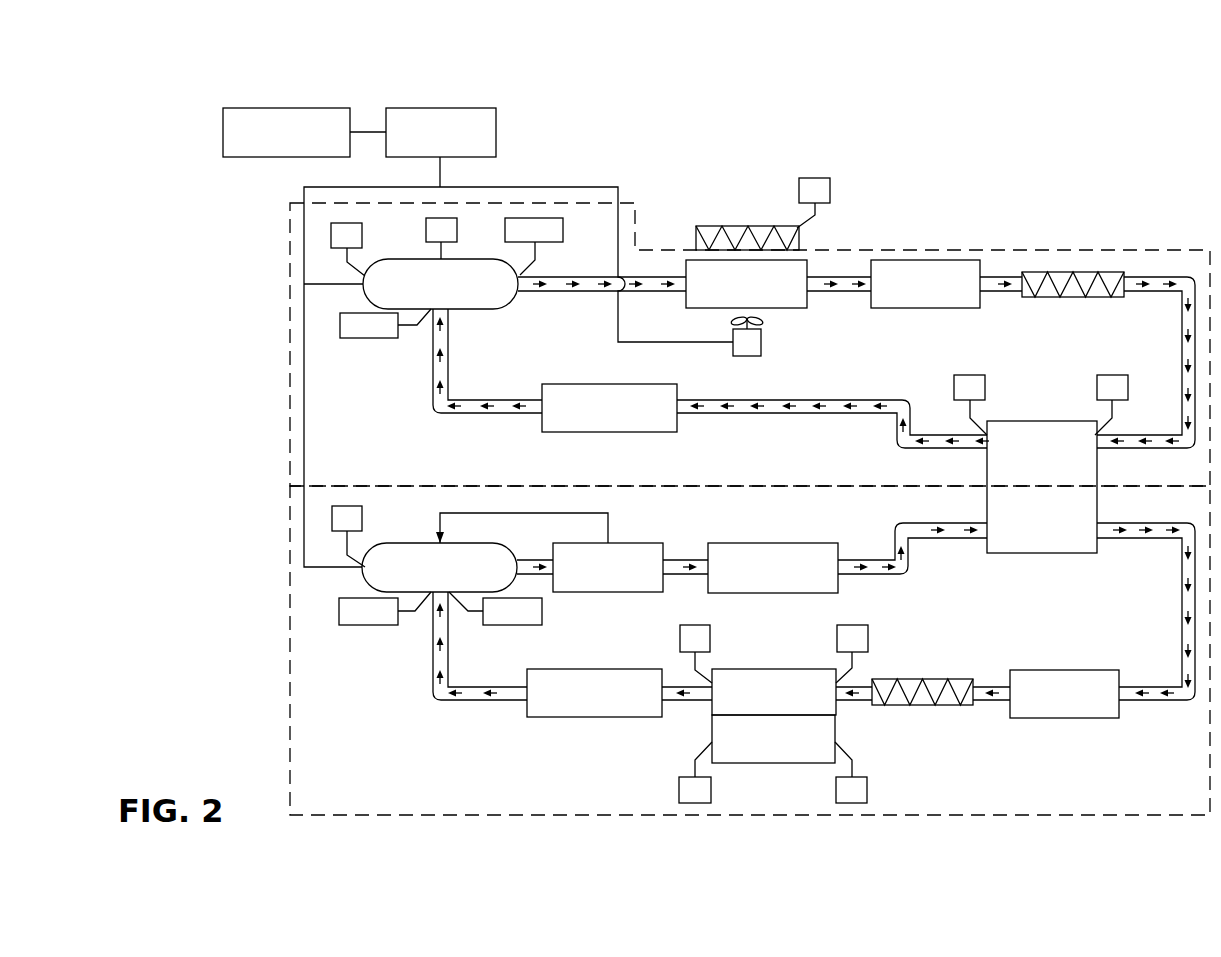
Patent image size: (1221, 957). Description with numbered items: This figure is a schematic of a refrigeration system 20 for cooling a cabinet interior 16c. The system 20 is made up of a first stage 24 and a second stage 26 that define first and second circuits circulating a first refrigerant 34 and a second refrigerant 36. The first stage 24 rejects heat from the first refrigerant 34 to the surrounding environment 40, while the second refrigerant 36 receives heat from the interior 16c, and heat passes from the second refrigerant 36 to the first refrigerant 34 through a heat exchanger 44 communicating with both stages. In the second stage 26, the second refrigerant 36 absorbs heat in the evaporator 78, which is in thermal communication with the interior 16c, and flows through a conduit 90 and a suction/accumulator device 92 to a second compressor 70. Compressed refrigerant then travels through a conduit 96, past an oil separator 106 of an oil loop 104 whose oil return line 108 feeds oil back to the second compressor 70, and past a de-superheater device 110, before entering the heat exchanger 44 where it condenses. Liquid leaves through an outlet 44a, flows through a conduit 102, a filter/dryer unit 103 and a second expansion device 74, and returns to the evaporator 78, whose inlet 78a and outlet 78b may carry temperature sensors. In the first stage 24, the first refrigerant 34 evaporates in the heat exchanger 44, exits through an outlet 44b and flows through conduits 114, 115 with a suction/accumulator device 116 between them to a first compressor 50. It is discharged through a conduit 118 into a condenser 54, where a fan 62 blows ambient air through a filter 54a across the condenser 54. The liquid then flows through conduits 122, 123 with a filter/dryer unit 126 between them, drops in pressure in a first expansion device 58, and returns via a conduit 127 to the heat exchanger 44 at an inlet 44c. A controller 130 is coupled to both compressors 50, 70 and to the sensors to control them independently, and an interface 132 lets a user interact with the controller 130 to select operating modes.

The refrigeration system 20 is at (1120, 154).
The first stage 24 is at (289, 356).
The second stage 26 is at (289, 700).
The first refrigerant 34 is at (598, 291).
The second refrigerant 36 is at (690, 560).
The surrounding environment 40 is at (775, 203).
The heat exchanger 44 is at (1040, 422).
The outlet 44a is at (1100, 523).
The outlet 44b is at (987, 452).
The inlet 44c is at (1097, 452).
The first compressor 50 is at (478, 309).
The condenser 54 is at (697, 308).
The filter 54a is at (696, 238).
The first expansion device 58 is at (1073, 272).
The fan 62 is at (735, 356).
The second compressor 70 is at (402, 543).
The second expansion device 74 is at (945, 679).
The evaporator 78 is at (775, 669).
The inlet 78a is at (838, 712).
The outlet 78b is at (712, 712).
The conduit 90 is at (685, 683).
The suction/accumulator device 92 is at (578, 717).
The conduit 96 is at (537, 560).
The conduit 102 is at (1182, 605).
The filter/dryer unit 103 is at (1067, 670).
The oil loop 104 is at (620, 526).
The oil separator 106 is at (608, 592).
The oil return line 108 is at (598, 513).
The de-superheater device 110 is at (748, 543).
The conduit 114 is at (805, 400).
The conduit 115 is at (433, 367).
The suction/accumulator device 116 is at (590, 384).
The conduit 118 is at (545, 291).
The conduit 122 is at (842, 291).
The conduit 123 is at (1000, 277).
The filter/dryer unit 126 is at (927, 308).
The conduit 127 is at (1155, 291).
The controller 130 is at (232, 108).
The interface 132 is at (488, 108).
The cabinet interior 16c is at (773, 763).